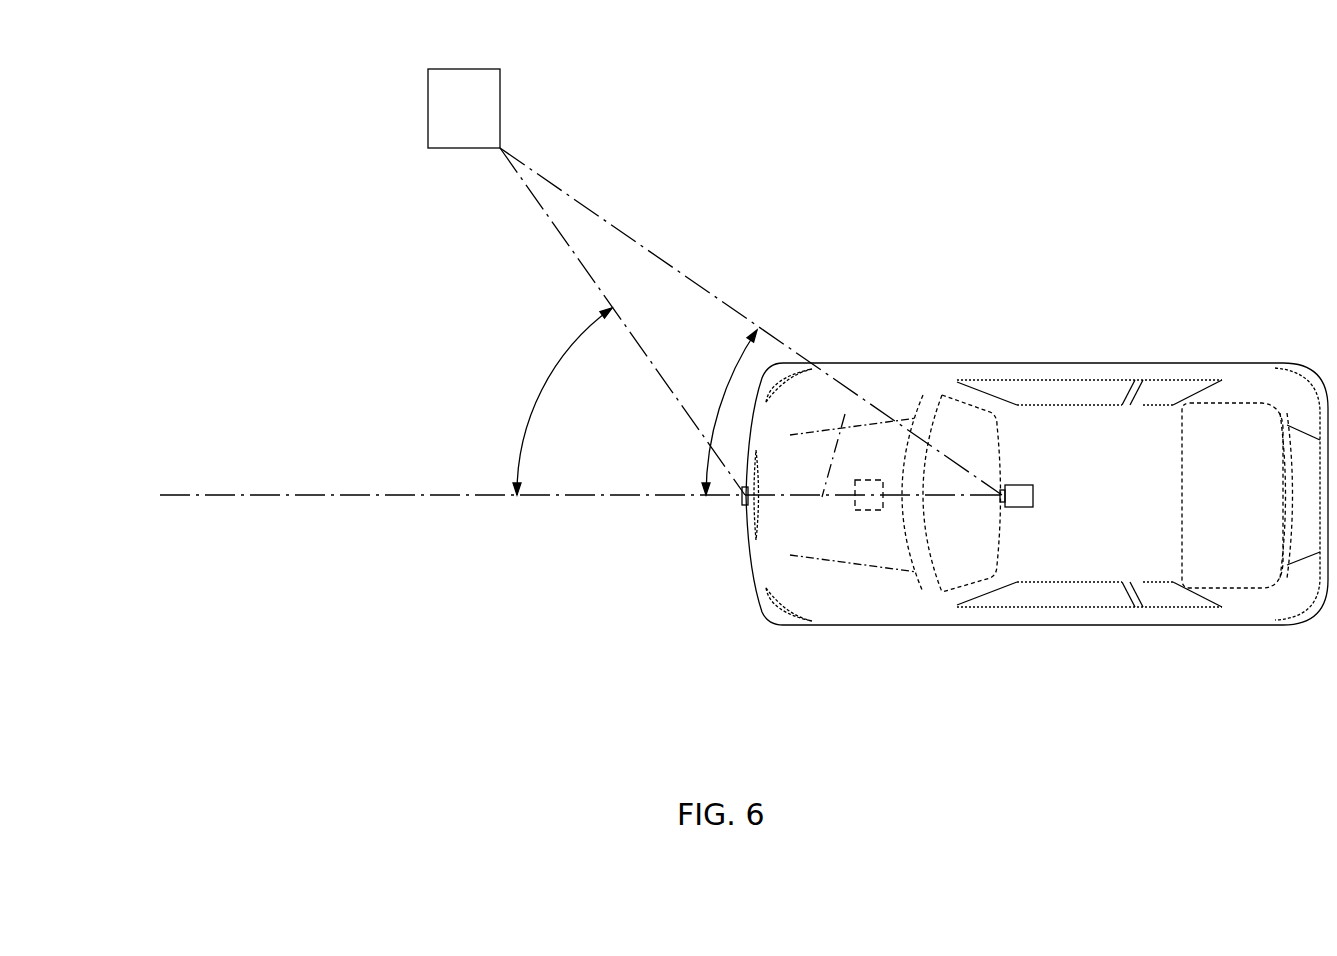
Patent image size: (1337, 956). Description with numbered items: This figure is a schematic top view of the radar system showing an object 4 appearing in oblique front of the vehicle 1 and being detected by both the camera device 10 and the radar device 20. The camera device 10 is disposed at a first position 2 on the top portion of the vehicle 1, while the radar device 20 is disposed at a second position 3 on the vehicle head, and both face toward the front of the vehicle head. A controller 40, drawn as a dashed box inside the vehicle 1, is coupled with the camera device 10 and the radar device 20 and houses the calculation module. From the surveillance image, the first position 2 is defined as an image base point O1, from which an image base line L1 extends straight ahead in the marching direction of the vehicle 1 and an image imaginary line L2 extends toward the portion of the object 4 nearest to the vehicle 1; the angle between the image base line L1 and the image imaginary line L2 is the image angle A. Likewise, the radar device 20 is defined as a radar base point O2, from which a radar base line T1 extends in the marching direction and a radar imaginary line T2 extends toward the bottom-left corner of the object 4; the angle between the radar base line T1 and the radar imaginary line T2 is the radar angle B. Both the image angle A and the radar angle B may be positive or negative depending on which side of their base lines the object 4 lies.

The vehicle 1 is at (1214, 336).
The first position 2 is at (1028, 562).
The second position 3 is at (750, 560).
The object 4 is at (473, 105).
The camera device 10 is at (1025, 483).
The radar device 20 is at (740, 508).
The controller 40 is at (856, 512).
The radar base line T1 is at (490, 495).
The radar imaginary line T2 is at (662, 387).
The image base line L1 is at (845, 414).
The image imaginary line L2 is at (695, 287).
The image base point O1 is at (999, 493).
The radar base point O2 is at (742, 497).
The image angle A is at (728, 412).
The radar angle B is at (560, 401).